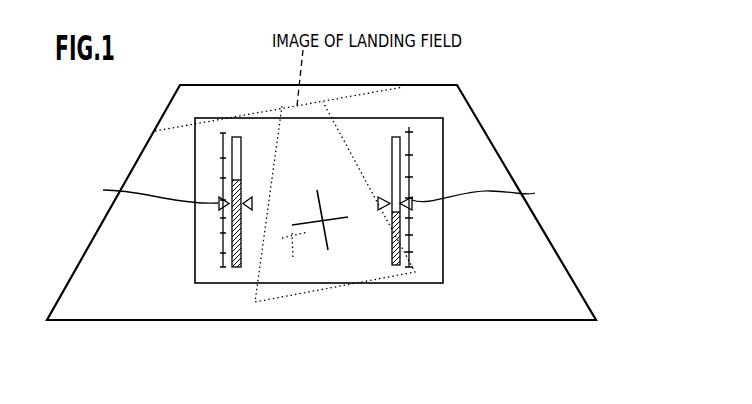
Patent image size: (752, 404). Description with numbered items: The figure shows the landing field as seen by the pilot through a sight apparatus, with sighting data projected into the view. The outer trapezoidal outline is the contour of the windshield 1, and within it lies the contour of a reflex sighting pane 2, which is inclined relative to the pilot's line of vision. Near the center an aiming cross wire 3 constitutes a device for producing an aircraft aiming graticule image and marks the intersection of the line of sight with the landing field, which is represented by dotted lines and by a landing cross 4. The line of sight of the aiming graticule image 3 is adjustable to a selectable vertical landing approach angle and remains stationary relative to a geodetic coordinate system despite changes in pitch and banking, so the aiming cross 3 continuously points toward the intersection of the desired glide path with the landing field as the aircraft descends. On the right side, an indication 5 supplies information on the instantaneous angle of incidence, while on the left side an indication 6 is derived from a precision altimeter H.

The windshield contour 1 is at (562, 262).
The reflex sighting pane contour 2 is at (432, 285).
The aiming cross wire 3 is at (340, 215).
The landing cross 4 is at (293, 258).
The angle of incidence indication 5 is at (392, 243).
The altimeter indication 6 is at (223, 232).